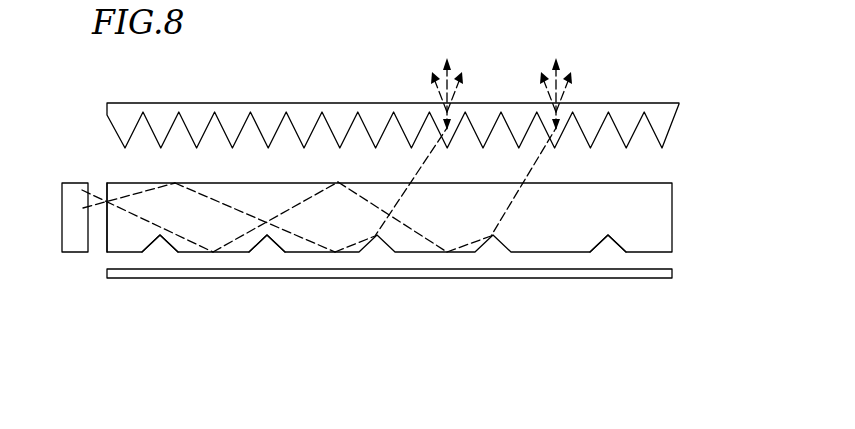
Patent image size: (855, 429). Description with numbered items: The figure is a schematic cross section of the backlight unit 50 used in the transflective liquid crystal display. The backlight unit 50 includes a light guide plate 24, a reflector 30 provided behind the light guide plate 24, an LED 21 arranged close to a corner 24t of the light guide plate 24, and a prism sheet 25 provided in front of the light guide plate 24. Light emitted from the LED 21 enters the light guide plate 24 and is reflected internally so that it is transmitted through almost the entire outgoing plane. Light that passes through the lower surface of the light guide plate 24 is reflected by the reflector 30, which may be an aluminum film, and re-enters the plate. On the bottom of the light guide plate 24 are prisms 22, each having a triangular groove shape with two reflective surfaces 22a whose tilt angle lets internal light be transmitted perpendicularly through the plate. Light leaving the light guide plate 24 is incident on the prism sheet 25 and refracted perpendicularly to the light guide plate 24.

The backlight unit 50 is at (762, 79).
The prism sheet 25 is at (662, 122).
The LED 21 is at (72, 223).
The light guide plate 24 is at (655, 213).
The corner of the light guide plate 24t is at (108, 225).
The reflective surfaces 22a is at (263, 242).
The prisms 22 is at (602, 243).
The reflector 30 is at (455, 272).